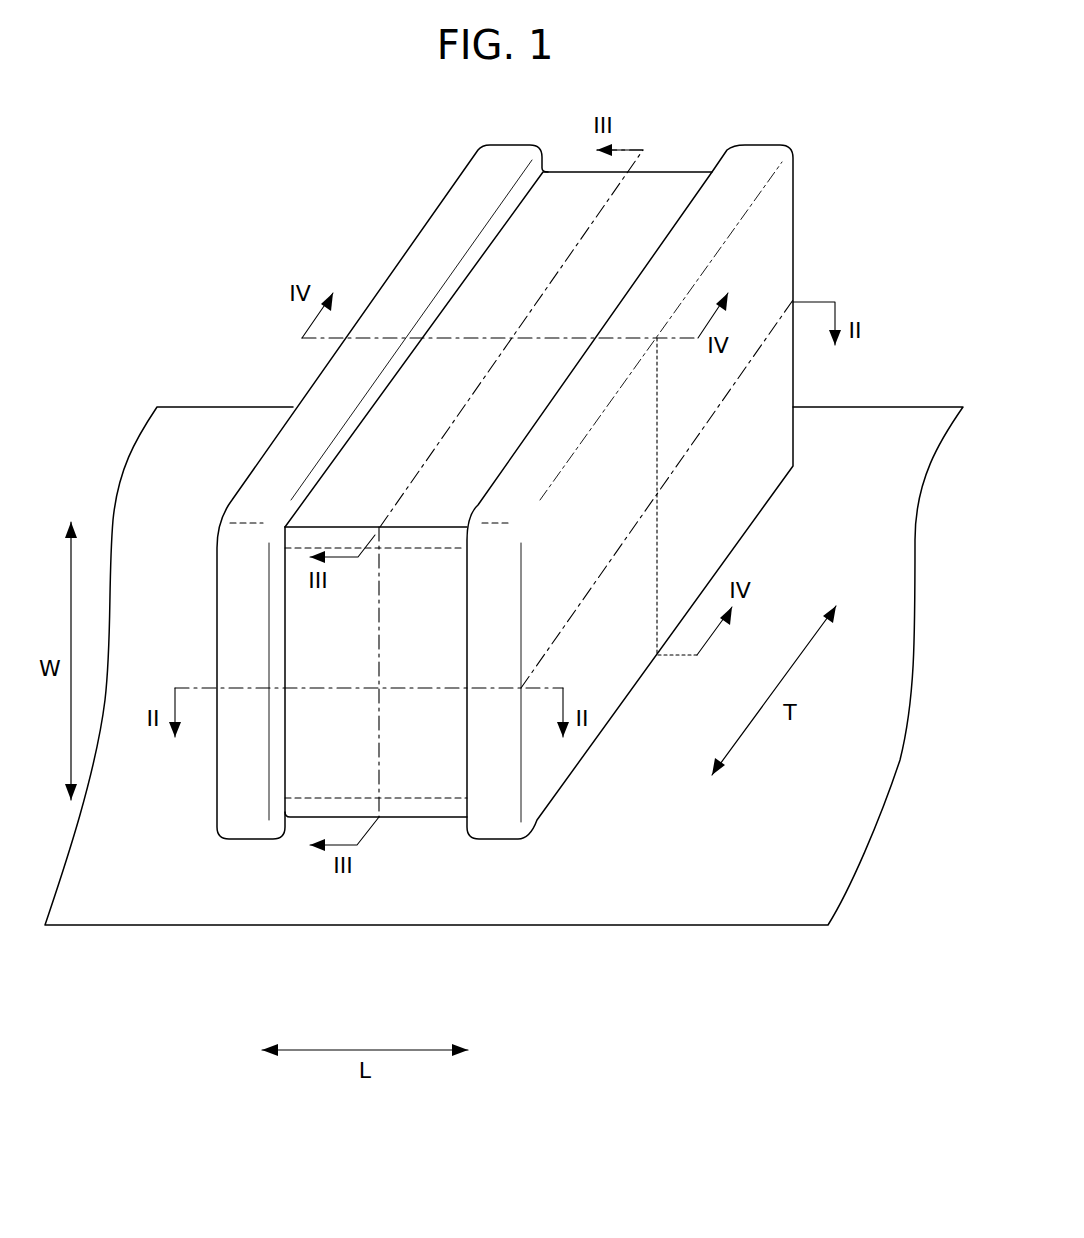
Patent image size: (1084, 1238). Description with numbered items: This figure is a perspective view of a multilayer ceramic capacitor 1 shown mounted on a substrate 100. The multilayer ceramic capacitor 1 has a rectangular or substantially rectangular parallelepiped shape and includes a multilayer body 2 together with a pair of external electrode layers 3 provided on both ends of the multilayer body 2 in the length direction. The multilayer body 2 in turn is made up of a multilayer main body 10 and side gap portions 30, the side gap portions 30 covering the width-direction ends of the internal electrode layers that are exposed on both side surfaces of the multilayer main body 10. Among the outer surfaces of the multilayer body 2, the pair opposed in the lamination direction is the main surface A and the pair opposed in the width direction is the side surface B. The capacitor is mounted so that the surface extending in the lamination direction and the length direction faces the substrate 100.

The multilayer ceramic capacitor 1 is at (440, 574).
The multilayer body 2 is at (439, 595).
The external electrode layers 3 is at (225, 783).
The multilayer main body 10 is at (300, 768).
The side gap portions 30 is at (308, 538).
The substrate 100 is at (845, 851).
The main surface A is at (683, 172).
The side surface B is at (499, 465).